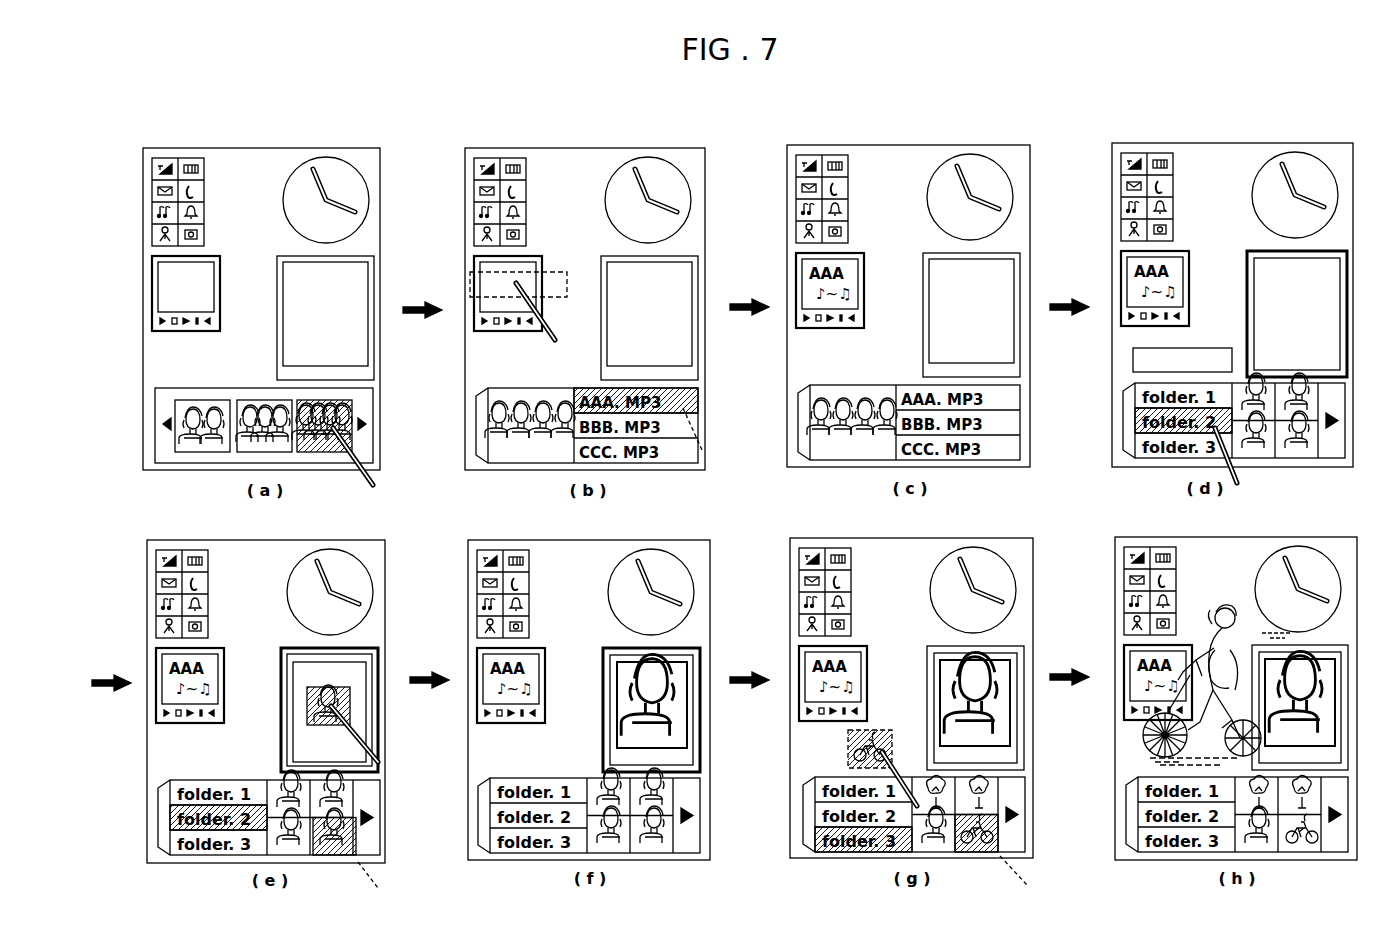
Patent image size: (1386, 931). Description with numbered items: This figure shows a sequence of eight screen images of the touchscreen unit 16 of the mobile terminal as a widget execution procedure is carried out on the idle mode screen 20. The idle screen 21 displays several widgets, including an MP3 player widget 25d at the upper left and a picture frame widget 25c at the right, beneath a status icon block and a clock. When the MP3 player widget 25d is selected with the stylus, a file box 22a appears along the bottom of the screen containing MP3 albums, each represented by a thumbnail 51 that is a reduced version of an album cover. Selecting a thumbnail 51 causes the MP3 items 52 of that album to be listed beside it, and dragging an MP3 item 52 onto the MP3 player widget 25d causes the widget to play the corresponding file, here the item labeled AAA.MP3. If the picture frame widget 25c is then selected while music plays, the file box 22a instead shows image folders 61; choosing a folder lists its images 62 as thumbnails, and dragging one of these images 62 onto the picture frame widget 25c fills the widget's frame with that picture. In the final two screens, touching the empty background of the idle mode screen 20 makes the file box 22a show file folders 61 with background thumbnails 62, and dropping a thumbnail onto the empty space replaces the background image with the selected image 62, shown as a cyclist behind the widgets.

The touchscreen unit 16 is at (132, 110).
The idle mode screen 20 is at (330, 142).
The idle mode screen 21 is at (912, 554).
The file box 22a is at (155, 421).
The picture frame widget 25c is at (1247, 268).
The MP3 player widget 25d is at (152, 276).
The thumbnail 51 is at (331, 456).
The MP3 item 52 is at (468, 286).
The image folder 61 is at (1135, 430).
The image 62 is at (1268, 462).